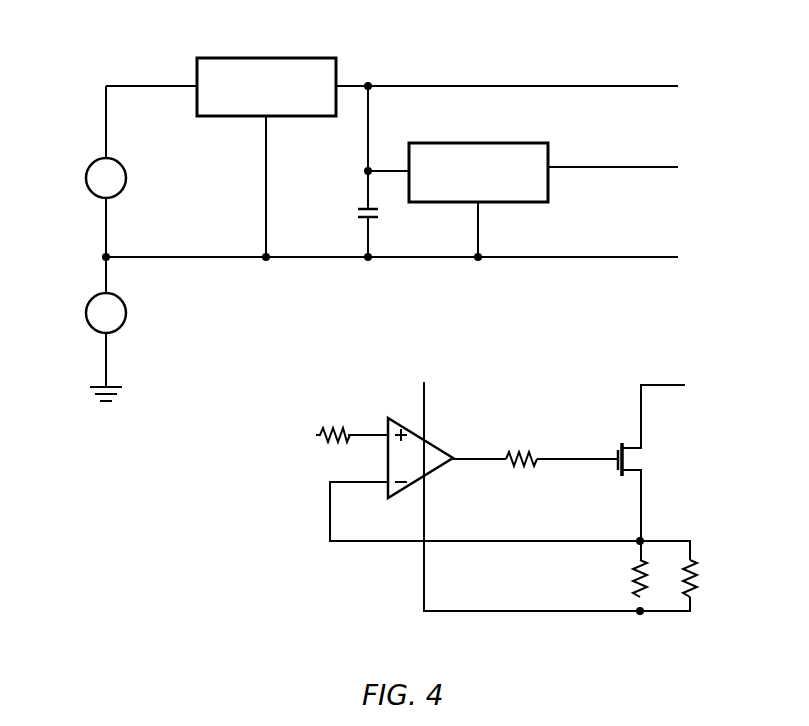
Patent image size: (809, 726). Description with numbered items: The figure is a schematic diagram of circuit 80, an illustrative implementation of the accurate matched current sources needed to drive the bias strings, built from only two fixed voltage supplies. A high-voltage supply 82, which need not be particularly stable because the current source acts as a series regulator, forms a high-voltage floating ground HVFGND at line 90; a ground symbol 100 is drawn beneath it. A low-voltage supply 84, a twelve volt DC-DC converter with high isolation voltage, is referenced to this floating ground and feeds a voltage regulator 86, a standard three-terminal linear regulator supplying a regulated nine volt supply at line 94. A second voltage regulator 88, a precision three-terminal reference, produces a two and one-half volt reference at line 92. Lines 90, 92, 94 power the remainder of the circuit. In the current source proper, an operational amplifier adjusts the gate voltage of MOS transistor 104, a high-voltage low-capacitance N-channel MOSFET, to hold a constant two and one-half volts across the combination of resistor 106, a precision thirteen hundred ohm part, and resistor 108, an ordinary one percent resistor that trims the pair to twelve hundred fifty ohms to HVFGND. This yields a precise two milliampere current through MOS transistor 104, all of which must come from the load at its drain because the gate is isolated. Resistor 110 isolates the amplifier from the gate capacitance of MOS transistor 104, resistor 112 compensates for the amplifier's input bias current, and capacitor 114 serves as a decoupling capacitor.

The circuit 80 is at (670, 313).
The high-voltage supply 82 is at (84, 313).
The low-voltage supply 84 is at (84, 178).
The voltage regulator 86 is at (267, 57).
The voltage regulator 88 is at (478, 143).
The line 90 is at (633, 256).
The line 92 is at (633, 166).
The line 94 is at (633, 86).
The ground 100 is at (122, 390).
The MOS transistor 104 is at (437, 441).
The resistor 106 is at (706, 585).
The resistor 108 is at (624, 585).
The resistor 110 is at (522, 445).
The resistor 112 is at (337, 425).
The capacitor 114 is at (357, 210).